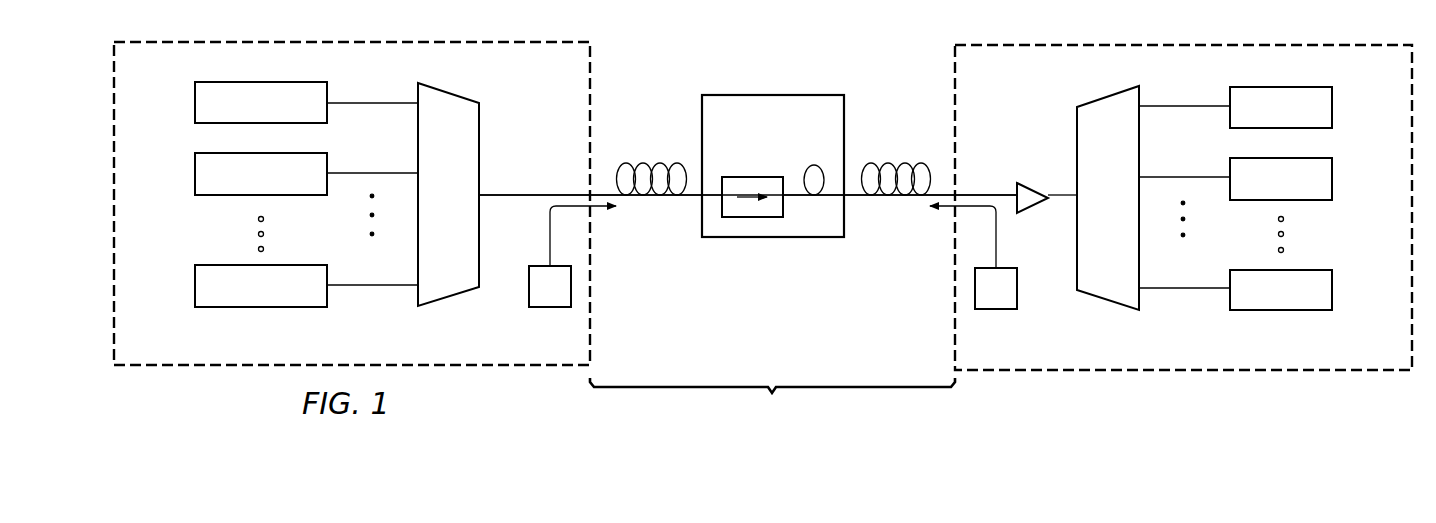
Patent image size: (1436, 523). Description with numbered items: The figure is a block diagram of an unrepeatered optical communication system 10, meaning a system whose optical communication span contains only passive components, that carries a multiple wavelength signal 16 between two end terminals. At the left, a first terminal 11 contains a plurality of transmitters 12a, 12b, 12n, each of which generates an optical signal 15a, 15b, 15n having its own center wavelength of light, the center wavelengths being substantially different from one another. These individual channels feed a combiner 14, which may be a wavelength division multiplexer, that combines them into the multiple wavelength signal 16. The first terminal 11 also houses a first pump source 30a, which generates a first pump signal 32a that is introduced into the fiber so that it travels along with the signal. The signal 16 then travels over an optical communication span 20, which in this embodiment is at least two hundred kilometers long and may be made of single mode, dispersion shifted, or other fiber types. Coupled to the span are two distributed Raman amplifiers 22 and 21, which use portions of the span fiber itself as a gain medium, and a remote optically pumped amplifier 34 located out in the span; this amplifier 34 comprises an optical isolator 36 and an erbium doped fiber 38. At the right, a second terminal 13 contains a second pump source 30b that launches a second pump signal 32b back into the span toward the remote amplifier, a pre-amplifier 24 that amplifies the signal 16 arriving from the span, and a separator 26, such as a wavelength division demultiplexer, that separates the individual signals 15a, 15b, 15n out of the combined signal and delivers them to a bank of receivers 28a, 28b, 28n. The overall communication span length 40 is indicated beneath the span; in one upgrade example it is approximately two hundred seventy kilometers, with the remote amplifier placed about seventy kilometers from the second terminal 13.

The unrepeatered optical communication system 10 is at (652, 80).
The first terminal 11 is at (551, 88).
The transmitter 12a is at (195, 101).
The transmitter 12b is at (195, 172).
The transmitter 12n is at (195, 288).
The second terminal 13 is at (1017, 88).
The combiner 14 is at (460, 230).
The optical signal 15a is at (403, 103).
The optical signal 15b is at (403, 173).
The optical signal 15n is at (403, 287).
The multiple wavelength signal 16 is at (530, 195).
The optical communication span 20 is at (870, 83).
The distributed Raman amplifier 21 is at (900, 165).
The distributed Raman amplifier 22 is at (644, 163).
The pre-amplifier 24 is at (1037, 190).
The separator 26 is at (1119, 237).
The receiver 28a is at (1332, 110).
The receiver 28b is at (1332, 181).
The receiver 28n is at (1332, 292).
The first pump source 30a is at (540, 307).
The second pump source 30b is at (1000, 309).
The first pump signal 32a is at (550, 242).
The second pump signal 32b is at (996, 242).
The remote optically pumped amplifier 34 is at (800, 240).
The optical isolator 36 is at (752, 177).
The erbium doped fiber 38 is at (814, 165).
The communication span length 40 is at (772, 400).